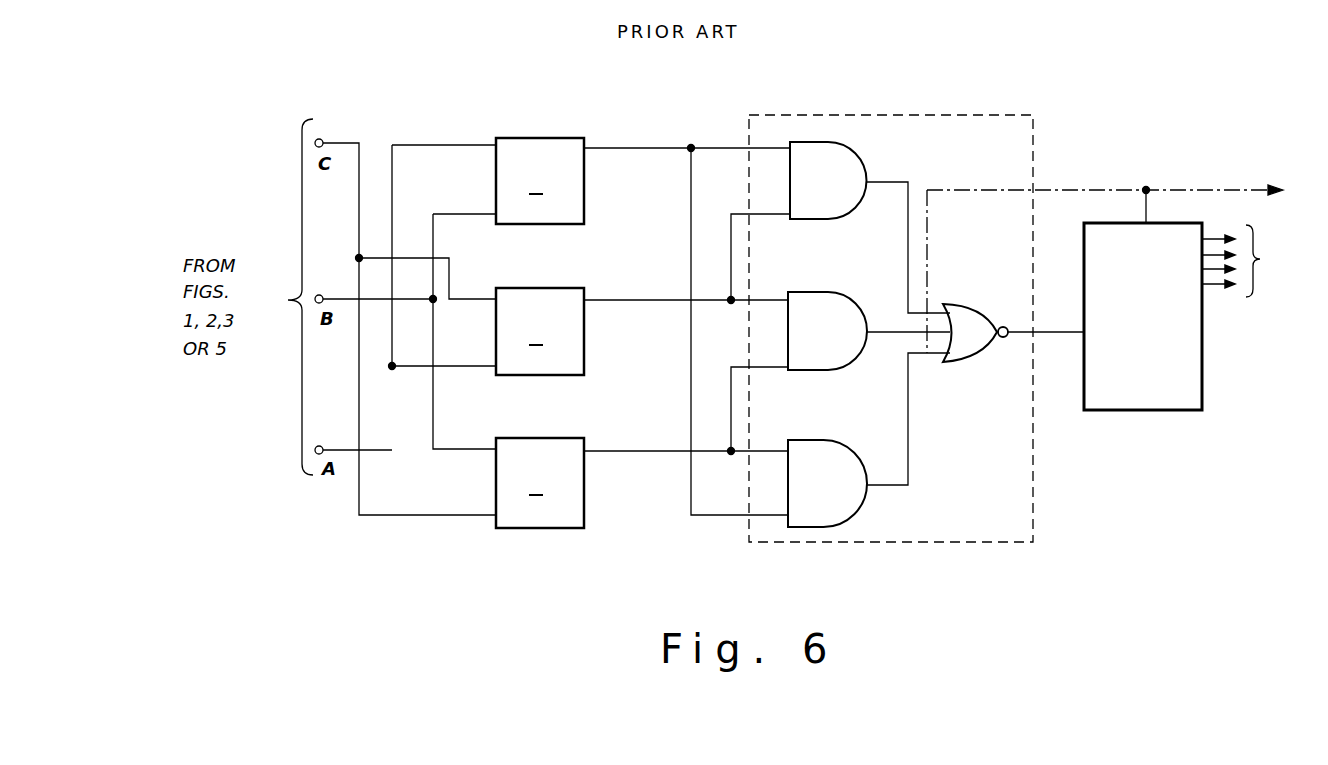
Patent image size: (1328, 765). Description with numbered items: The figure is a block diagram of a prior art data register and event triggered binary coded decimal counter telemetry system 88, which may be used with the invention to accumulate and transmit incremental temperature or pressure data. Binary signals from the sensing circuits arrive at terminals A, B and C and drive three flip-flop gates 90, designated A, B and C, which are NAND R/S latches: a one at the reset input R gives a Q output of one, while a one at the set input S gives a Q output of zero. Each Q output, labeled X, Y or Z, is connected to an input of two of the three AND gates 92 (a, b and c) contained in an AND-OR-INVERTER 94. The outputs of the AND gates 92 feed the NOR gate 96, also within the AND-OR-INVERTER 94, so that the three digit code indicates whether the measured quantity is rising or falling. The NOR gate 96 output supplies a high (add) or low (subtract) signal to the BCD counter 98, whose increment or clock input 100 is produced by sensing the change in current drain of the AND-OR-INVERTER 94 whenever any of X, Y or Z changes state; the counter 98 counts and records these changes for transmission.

The data register and event triggered BCD counter telemetry system 88 is at (667, 128).
The flip-flop gates 90 is at (584, 199).
The AND gates 92 is at (840, 213).
The AND-OR-INVERTER 94 is at (1033, 120).
The NOR gate 96 is at (963, 313).
The binary coded decimal counter 98 is at (1150, 411).
The increment or clock input 100 is at (1150, 220).